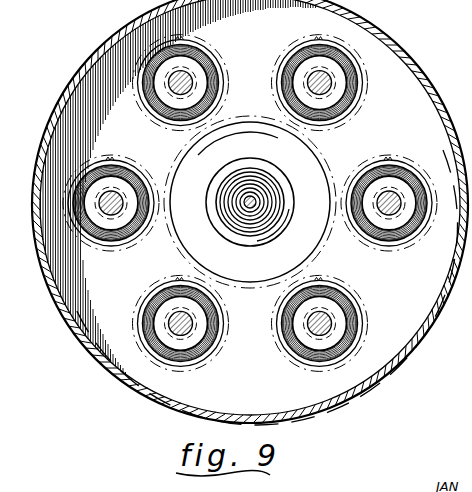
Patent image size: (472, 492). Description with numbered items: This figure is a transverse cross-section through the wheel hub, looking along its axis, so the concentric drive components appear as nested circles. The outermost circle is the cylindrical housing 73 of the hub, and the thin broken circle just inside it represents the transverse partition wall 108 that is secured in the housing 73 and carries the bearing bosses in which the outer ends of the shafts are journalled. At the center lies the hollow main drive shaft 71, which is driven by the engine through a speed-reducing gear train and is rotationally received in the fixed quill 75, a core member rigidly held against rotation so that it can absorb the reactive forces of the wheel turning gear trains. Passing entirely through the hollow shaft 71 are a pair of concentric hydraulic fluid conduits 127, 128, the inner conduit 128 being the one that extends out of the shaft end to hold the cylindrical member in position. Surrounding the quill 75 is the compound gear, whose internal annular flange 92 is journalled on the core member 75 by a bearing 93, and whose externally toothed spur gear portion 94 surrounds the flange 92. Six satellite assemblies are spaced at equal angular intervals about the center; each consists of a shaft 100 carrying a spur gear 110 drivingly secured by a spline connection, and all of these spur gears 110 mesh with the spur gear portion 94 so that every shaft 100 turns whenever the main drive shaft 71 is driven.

The cylindrical housing 73 is at (70, 329).
The transverse partition wall 108 is at (407, 92).
The spur gear 110 is at (351, 295).
The shaft 100 is at (313, 332).
The externally toothed spur gear portion 94 is at (330, 165).
The internal annular flange 92 is at (190, 168).
The main drive shaft 71 is at (237, 197).
The fixed quill 75 is at (237, 222).
The bearing 93 is at (272, 190).
The hydraulic fluid conduit 127 is at (250, 190).
The inner hydraulic fluid conduit 128 is at (254, 203).